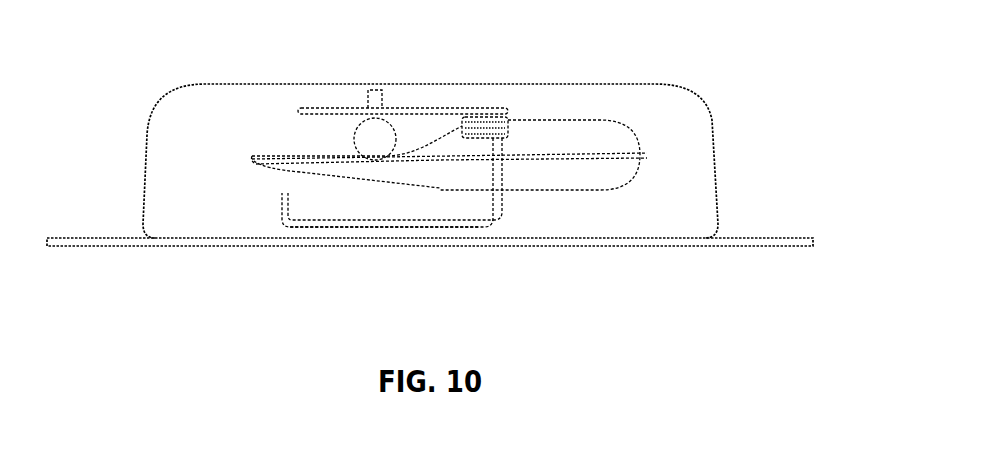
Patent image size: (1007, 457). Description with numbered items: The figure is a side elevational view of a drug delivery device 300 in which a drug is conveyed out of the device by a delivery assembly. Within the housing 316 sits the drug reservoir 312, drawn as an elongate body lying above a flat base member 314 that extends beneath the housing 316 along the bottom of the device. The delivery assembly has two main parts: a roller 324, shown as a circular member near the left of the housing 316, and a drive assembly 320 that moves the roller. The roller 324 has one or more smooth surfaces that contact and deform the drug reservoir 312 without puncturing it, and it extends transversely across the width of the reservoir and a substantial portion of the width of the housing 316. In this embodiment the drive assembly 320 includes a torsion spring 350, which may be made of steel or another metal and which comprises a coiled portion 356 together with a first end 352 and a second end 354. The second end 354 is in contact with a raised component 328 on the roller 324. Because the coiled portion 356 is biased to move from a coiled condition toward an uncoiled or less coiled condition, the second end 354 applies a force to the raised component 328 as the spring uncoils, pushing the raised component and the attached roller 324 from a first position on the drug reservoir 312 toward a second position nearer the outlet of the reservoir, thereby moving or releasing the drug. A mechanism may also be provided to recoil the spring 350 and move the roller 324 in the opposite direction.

The drug delivery device 300 is at (258, 266).
The drug reservoir 312 is at (592, 137).
The base plate 314 is at (813, 240).
The housing 316 is at (698, 103).
The drive assembly 320 is at (512, 218).
The roller 324 is at (375, 140).
The raised component 328 is at (375, 90).
The torsion spring 350 is at (480, 110).
The first end 352 is at (385, 230).
The second end 354 is at (447, 105).
The coiled portion 356 is at (498, 116).